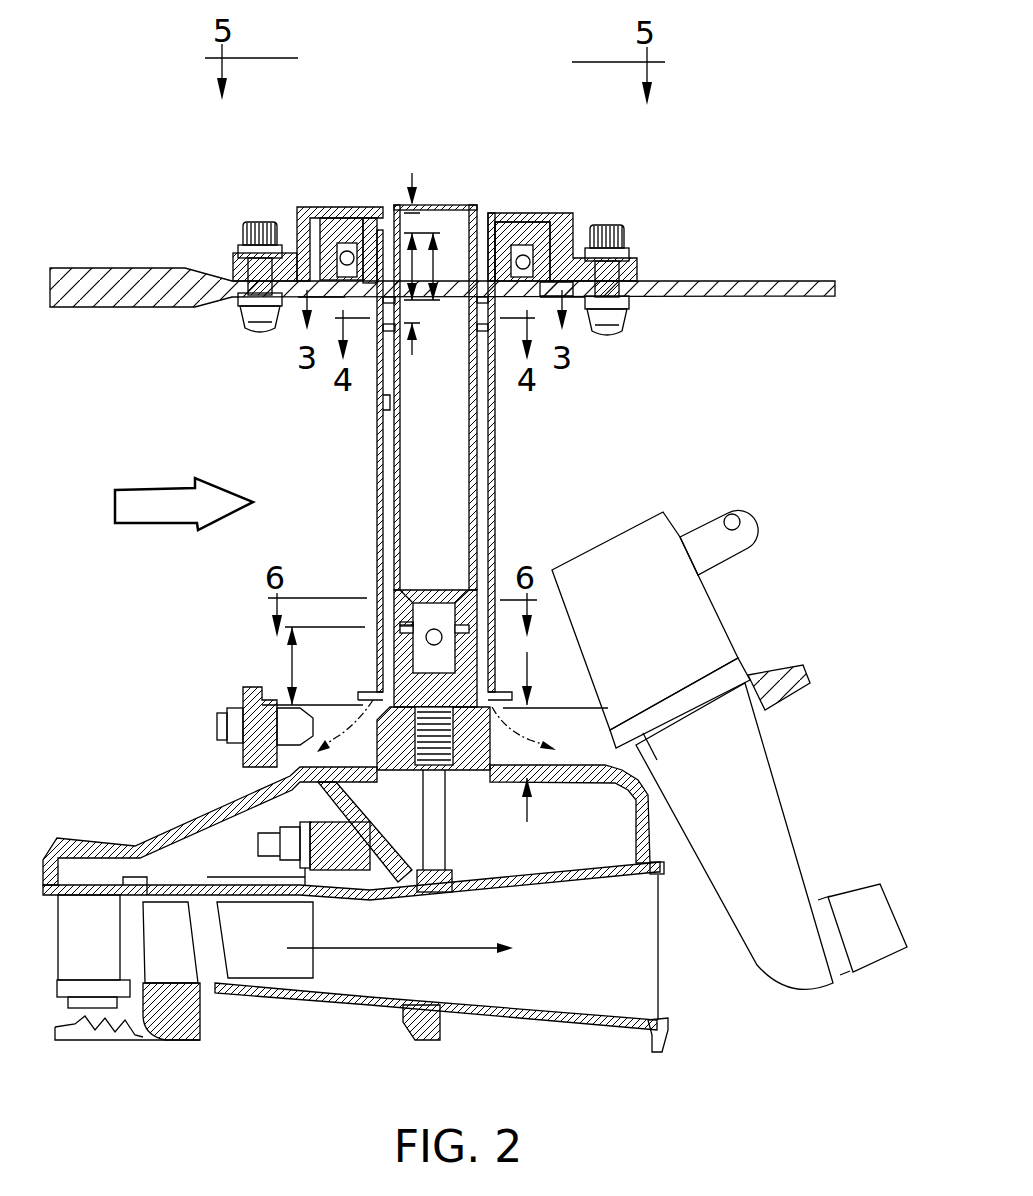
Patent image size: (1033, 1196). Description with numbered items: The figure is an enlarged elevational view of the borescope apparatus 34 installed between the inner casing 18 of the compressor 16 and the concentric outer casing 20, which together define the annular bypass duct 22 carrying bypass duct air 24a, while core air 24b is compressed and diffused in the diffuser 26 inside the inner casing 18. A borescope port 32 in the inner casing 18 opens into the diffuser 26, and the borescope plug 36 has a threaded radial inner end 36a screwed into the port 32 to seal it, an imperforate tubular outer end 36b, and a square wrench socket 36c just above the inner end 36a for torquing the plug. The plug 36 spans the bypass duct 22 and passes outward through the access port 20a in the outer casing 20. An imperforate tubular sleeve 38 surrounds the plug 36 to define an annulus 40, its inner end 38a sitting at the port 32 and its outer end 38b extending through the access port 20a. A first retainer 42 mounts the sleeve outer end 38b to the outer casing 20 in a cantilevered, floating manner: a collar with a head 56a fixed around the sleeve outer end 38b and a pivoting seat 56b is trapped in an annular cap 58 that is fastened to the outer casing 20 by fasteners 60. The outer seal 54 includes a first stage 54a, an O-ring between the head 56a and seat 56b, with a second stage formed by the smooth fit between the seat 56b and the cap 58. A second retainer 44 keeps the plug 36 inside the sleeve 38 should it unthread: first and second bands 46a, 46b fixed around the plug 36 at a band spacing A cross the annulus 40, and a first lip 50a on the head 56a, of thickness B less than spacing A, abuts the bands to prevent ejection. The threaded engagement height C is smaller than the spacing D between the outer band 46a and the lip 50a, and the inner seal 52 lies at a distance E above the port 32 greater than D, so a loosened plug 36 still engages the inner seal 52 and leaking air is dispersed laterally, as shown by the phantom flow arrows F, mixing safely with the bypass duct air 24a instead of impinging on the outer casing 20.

The multi-stage axial compressor 16 is at (100, 823).
The inner casing 18 is at (548, 760).
The outer casing 20 is at (720, 280).
The access port 20a is at (545, 297).
The bypass duct 22 is at (636, 459).
The bypass duct air 24a is at (180, 482).
The core air 24b is at (440, 947).
The diffuser 26 is at (574, 954).
The borescope port 32 is at (470, 760).
The borescope apparatus 34 is at (720, 351).
The borescope plug 36 is at (480, 490).
The threaded radial inner end 36a is at (430, 772).
The tubular outer end 36b is at (440, 205).
The wrench socket 36c is at (420, 606).
The tubular sleeve 38 is at (497, 537).
The sleeve inner end 38a is at (372, 690).
The sleeve outer end 38b is at (490, 216).
The annulus 40 is at (388, 521).
The first retainer 42 is at (638, 255).
The second retainer 44 is at (378, 405).
The first band 46a is at (497, 332).
The second band 46b is at (383, 337).
The first lip 50a is at (387, 212).
The inner seal 52 is at (392, 632).
The outer seal 54 is at (309, 201).
The first stage seal 54a is at (308, 256).
The head 56a is at (346, 268).
The seat 56b is at (342, 240).
The annular cap 58 is at (560, 213).
The fasteners 60 is at (622, 228).
The band spacing A is at (416, 354).
The lip thickness B is at (410, 173).
The threaded engagement height C is at (530, 668).
The band-to-lip spacing D is at (433, 266).
The seal-to-port distance E is at (290, 660).
The leakage flow arrows F is at (548, 737).